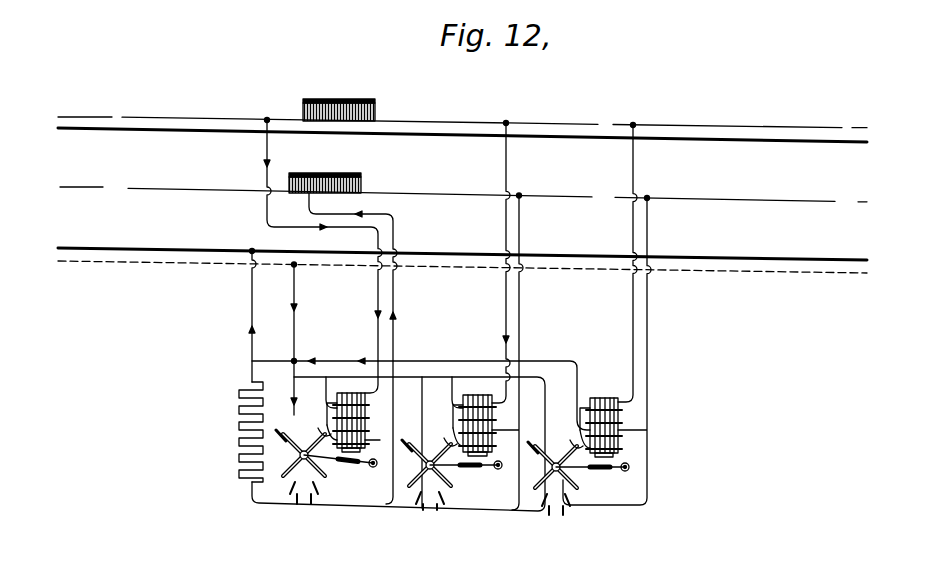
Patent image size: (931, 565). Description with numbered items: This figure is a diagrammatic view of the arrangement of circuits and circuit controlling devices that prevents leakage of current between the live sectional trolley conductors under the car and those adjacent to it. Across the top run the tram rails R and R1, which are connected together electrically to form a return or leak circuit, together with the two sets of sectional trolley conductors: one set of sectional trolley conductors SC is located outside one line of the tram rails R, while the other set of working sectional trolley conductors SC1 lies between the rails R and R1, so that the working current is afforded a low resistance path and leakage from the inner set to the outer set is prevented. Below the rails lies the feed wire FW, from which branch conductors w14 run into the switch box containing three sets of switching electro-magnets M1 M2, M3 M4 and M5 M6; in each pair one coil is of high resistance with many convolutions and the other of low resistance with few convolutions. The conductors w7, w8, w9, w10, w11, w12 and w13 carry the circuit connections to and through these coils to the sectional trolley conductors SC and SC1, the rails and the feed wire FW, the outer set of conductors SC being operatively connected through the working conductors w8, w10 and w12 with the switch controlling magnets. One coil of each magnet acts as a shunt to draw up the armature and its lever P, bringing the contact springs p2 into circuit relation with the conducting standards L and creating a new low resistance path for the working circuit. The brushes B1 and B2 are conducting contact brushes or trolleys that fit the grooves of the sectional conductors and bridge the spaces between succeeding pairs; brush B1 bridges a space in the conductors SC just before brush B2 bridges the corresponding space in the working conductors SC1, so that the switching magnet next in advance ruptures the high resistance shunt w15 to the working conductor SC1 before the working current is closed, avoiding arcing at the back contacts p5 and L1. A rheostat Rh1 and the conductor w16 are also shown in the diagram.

The sectional trolley conductor SC is at (181, 100).
The tram rail R is at (143, 133).
The sectional trolley conductor SC1 is at (187, 192).
The tram rail R1 is at (129, 245).
The feed wire FW is at (213, 265).
The conducting contact brush B1 is at (330, 98).
The conducting contact brush B2 is at (333, 165).
The conductor w7 is at (393, 313).
The working conductor w8 is at (378, 316).
The conductor w9 is at (519, 316).
The working conductor w10 is at (506, 316).
The conductor w11 is at (647, 320).
The working conductor w12 is at (633, 320).
The conductor w13 is at (252, 306).
The branch conductor w14 is at (294, 306).
The high resistance shunt w15 is at (393, 488).
The wire w16 is at (454, 392).
The rheostat Rh1 is at (224, 432).
The switching electro-magnet coil M1 is at (360, 393).
The switching electro-magnet coil M2 is at (372, 428).
The switching electro-magnet coil M3 is at (488, 396).
The switching electro-magnet coil M4 is at (497, 430).
The switching electro-magnet coil M5 is at (620, 410).
The switching electro-magnet coil M6 is at (630, 430).
The contact spring p2 is at (292, 446).
The back contact p5 is at (300, 457).
The lever P is at (348, 469).
The conducting standard L is at (445, 423).
The back contact L1 is at (301, 514).